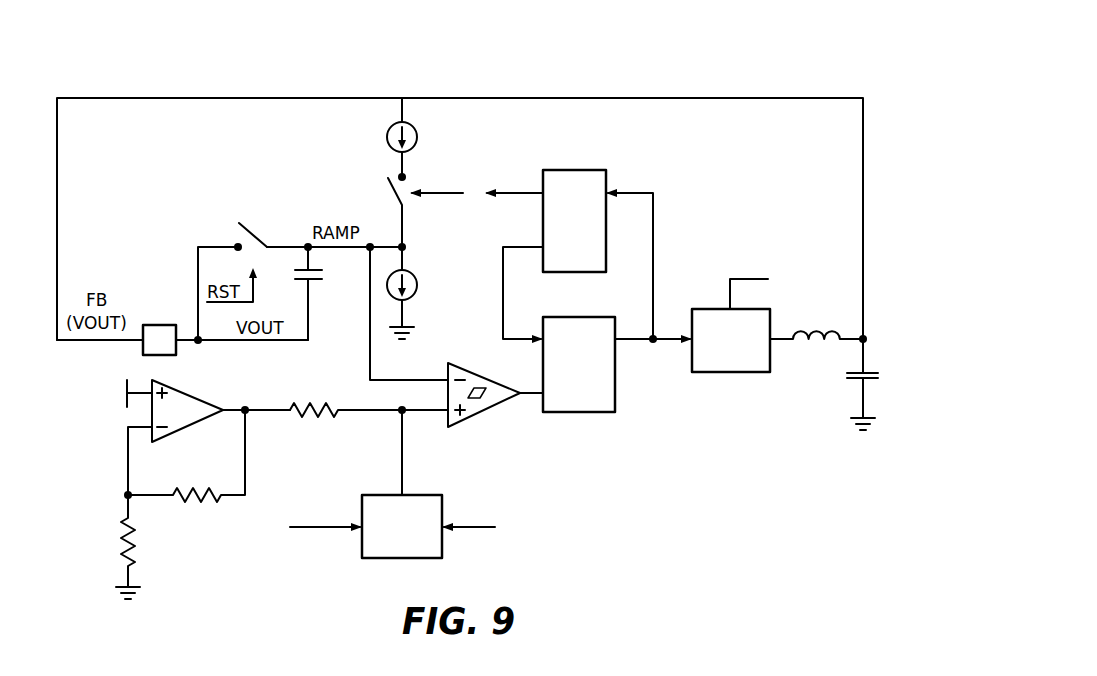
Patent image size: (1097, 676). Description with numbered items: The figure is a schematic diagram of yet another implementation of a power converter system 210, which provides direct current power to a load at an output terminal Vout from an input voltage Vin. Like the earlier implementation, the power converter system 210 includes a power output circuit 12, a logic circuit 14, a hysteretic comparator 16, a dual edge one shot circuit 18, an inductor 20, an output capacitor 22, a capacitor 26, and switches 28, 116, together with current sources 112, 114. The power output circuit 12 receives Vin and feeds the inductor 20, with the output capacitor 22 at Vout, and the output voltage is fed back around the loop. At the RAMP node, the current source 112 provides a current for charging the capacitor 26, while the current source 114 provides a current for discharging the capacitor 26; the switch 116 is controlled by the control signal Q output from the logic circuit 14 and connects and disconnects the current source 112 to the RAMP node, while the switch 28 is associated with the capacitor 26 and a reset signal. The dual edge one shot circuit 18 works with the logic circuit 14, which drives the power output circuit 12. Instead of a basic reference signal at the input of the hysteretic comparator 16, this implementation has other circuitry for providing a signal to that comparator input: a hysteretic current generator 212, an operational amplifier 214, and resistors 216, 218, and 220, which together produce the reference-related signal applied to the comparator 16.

The power converter system 210 is at (166, 70).
The current source 112 is at (388, 136).
The switch 116 is at (386, 178).
The current source 114 is at (411, 272).
The switch 28 is at (262, 238).
The capacitor 26 is at (312, 283).
The dual edge one shot circuit 18 is at (585, 170).
The logic circuit 14 is at (580, 412).
The hysteretic comparator 16 is at (474, 420).
The operational amplifier 214 is at (167, 382).
The resistor 218 is at (201, 507).
The resistor 220 is at (138, 555).
The resistor 216 is at (318, 422).
The hysteretic current generator 212 is at (412, 494).
The power output circuit 12 is at (705, 373).
The inductor 20 is at (800, 327).
The output capacitor 22 is at (848, 380).